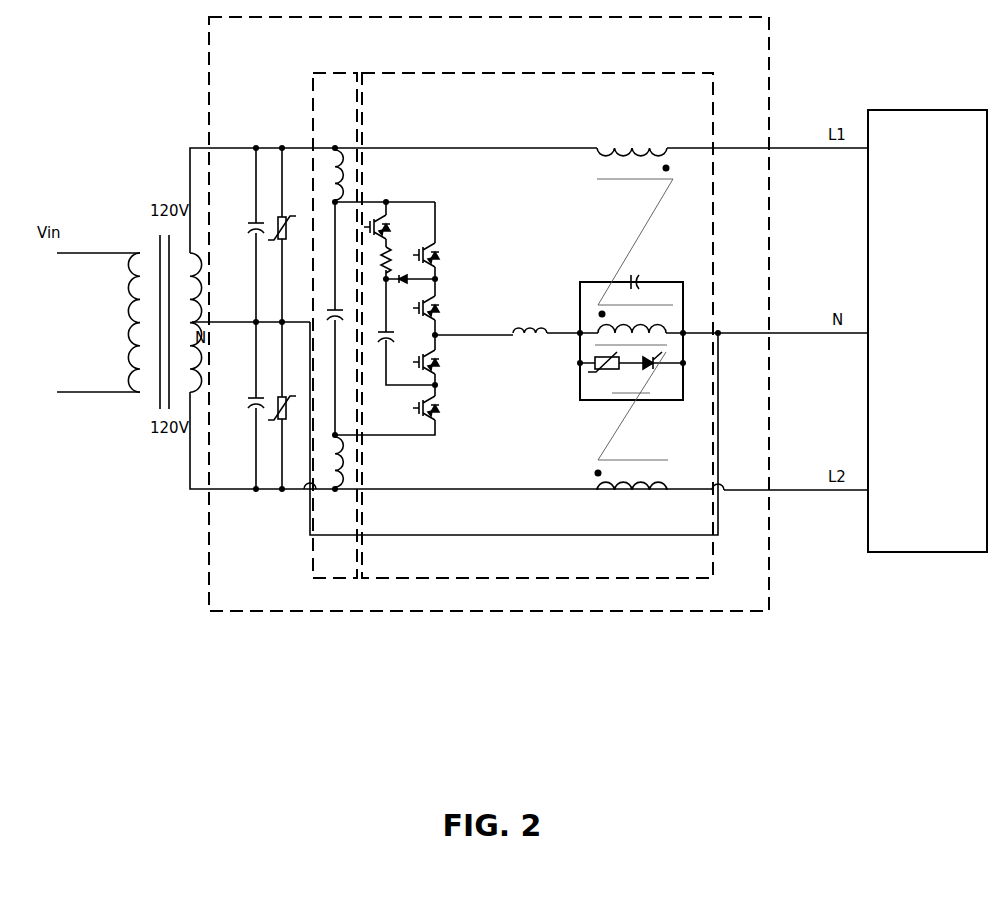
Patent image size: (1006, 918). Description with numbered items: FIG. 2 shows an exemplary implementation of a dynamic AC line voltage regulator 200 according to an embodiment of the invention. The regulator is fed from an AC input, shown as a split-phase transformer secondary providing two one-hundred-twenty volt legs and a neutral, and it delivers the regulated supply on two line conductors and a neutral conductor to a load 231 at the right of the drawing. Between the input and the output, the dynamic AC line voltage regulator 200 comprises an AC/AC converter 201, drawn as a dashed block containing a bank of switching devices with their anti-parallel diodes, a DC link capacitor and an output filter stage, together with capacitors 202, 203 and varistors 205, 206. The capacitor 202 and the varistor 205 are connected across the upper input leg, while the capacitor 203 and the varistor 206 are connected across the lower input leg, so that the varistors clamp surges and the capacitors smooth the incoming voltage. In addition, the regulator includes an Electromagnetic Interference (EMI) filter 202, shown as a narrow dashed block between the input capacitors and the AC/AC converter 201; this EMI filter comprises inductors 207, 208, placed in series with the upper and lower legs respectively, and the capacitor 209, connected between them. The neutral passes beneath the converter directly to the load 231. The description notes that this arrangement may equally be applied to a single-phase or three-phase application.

The dynamic AC line voltage regulator 200 is at (470, 52).
The AC/AC converter 201 is at (518, 99).
The Electromagnetic Interference (EMI) filter 202 is at (316, 99).
The capacitor 203 is at (250, 402).
The varistor 205 is at (285, 220).
The varistor 206 is at (285, 400).
The inductor 207 is at (345, 196).
The inductor 208 is at (344, 476).
The capacitor 209 is at (326, 306).
The load 231 is at (910, 353).